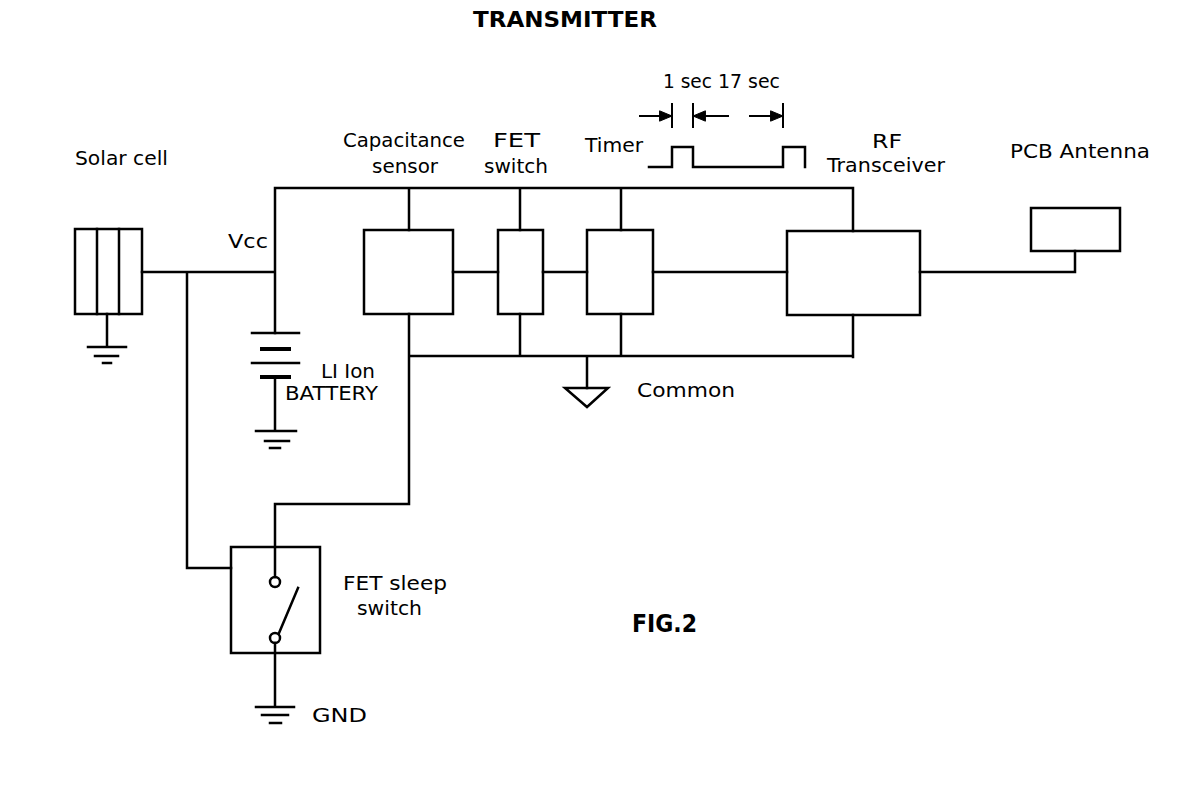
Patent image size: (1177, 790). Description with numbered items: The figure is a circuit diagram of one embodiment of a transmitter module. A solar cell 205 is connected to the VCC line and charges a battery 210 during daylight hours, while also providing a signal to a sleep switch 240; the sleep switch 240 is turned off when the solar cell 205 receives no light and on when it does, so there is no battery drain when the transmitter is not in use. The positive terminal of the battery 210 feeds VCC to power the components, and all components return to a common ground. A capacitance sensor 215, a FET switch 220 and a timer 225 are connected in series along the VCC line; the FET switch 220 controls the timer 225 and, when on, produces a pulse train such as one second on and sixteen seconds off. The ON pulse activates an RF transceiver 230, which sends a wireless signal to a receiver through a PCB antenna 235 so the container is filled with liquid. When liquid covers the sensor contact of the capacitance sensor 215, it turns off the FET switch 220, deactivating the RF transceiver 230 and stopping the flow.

The solar cell 205 is at (108, 275).
The battery 210 is at (251, 379).
The capacitance sensor 215 is at (408, 272).
The FET switch 220 is at (506, 261).
The timer 225 is at (620, 272).
The RF transceiver 230 is at (853, 273).
The PCB antenna 235 is at (1075, 229).
The sleep switch 240 is at (246, 635).